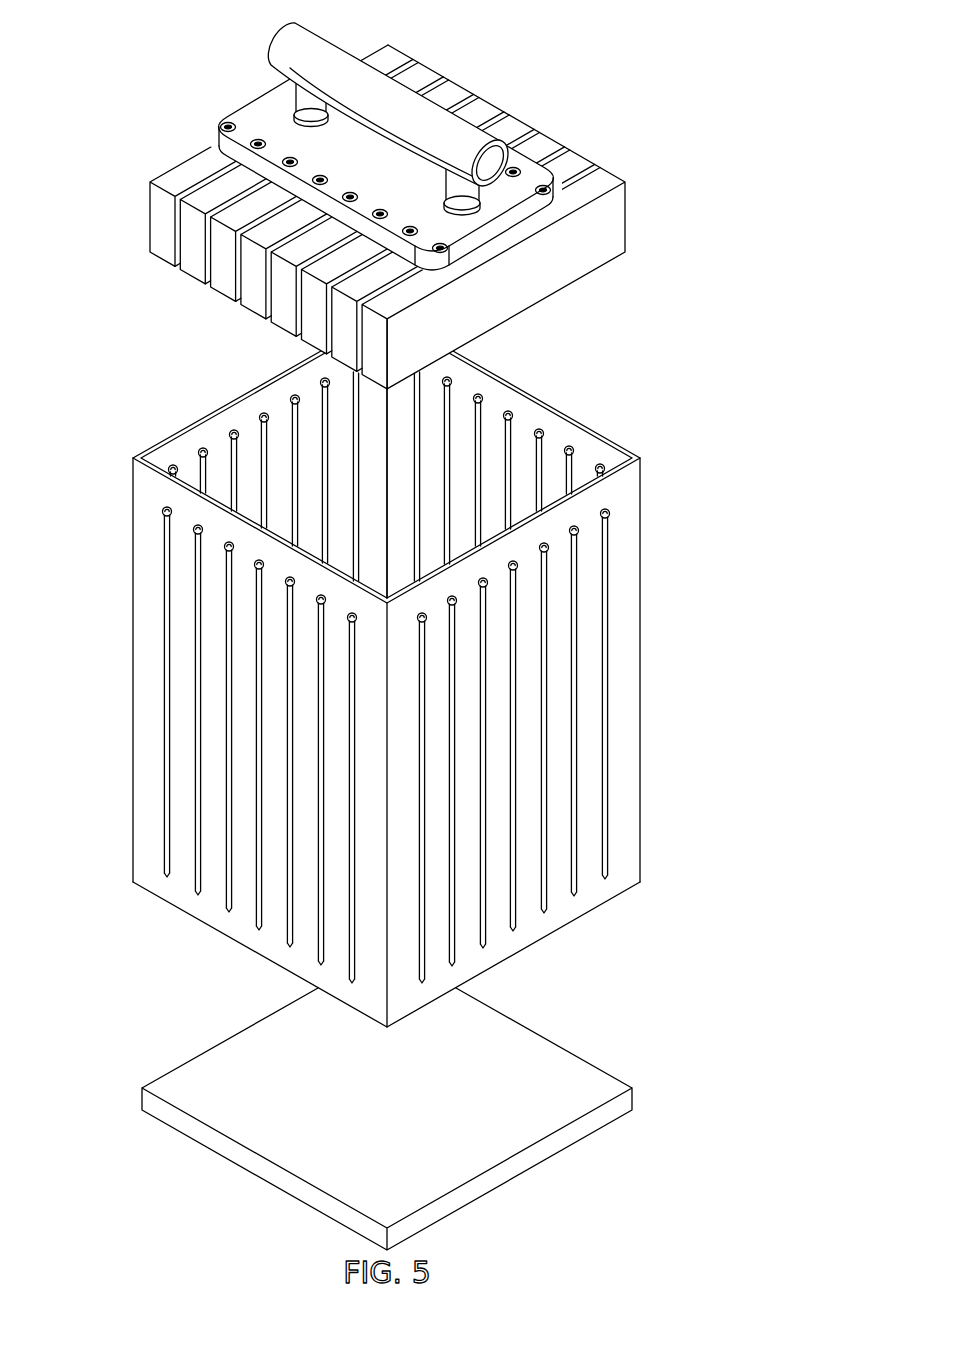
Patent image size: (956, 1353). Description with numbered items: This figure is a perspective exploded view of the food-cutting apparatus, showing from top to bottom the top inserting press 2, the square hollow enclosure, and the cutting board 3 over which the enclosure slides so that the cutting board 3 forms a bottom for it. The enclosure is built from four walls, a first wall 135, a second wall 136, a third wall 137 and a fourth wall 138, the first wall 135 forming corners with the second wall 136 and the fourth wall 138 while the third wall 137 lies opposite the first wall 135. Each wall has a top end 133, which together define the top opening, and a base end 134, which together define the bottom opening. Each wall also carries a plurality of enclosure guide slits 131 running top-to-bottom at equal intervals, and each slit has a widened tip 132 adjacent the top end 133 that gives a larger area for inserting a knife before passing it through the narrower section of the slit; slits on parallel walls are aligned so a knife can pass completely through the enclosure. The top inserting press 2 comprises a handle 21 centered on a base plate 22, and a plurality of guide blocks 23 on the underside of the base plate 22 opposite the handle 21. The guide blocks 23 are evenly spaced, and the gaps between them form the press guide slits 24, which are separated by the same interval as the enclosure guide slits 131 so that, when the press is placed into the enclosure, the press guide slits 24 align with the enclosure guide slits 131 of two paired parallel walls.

The top inserting press 2 is at (357, 197).
The handle 21 is at (288, 46).
The base plate 22 is at (245, 112).
The guide blocks 23 is at (388, 57).
The press guide slits 24 is at (441, 80).
The cutting board 3 is at (100, 1104).
The enclosure guide slits 131 is at (290, 416).
The widened tip 132 is at (294, 398).
The top end 133 is at (136, 460).
The base end 134 is at (140, 881).
The first wall 135 is at (142, 675).
The second wall 136 is at (627, 668).
The third wall 137 is at (527, 415).
The fourth wall 138 is at (188, 438).